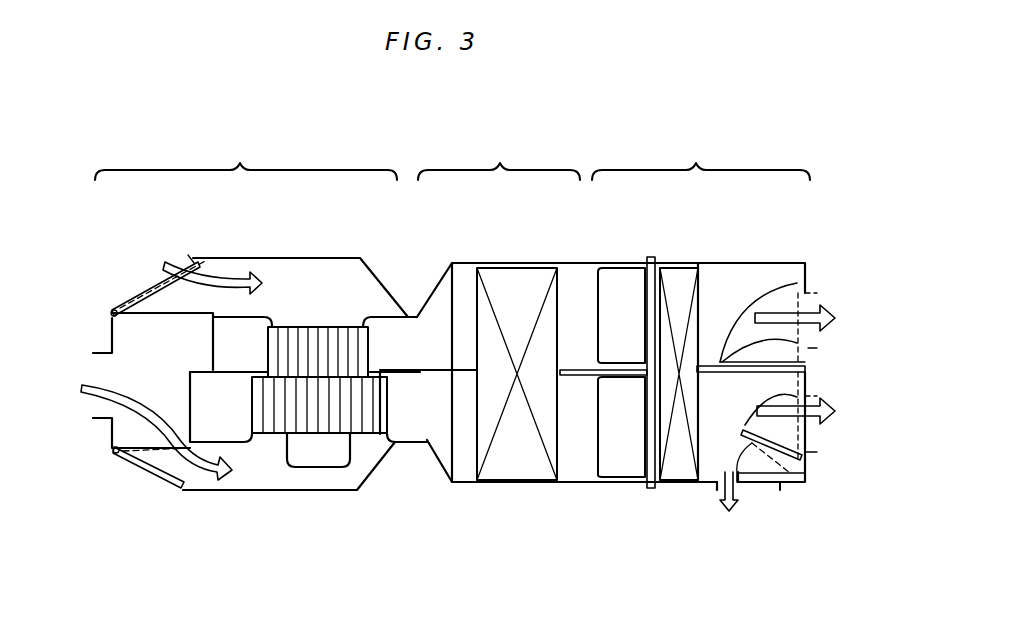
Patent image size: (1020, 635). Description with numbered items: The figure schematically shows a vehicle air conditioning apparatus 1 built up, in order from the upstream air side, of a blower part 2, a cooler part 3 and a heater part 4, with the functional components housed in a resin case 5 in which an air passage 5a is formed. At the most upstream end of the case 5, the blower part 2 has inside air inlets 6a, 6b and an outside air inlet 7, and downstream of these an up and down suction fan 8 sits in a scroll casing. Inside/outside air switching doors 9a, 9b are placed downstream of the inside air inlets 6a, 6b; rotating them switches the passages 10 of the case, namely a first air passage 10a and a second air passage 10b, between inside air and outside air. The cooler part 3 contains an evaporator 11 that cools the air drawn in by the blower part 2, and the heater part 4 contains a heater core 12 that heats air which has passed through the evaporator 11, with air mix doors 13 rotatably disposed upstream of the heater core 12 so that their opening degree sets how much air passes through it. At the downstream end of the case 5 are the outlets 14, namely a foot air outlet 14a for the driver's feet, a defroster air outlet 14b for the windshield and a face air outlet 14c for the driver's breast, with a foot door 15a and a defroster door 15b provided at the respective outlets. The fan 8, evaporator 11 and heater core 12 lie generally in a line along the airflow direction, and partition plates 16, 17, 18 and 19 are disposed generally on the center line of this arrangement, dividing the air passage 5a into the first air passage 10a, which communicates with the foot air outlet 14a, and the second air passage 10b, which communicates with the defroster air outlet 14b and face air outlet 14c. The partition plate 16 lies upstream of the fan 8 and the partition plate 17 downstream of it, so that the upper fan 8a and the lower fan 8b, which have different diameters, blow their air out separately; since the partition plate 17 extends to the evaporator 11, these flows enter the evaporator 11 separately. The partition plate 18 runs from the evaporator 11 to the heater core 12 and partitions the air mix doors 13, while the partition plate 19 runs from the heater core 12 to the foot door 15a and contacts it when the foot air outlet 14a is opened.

The air conditioning apparatus 1 is at (817, 248).
The blower part 2 is at (246, 157).
The cooler part 3 is at (499, 157).
The heater part 4 is at (701, 157).
The case 5 is at (261, 491).
The air passage 5a is at (448, 467).
The inside air inlet 6a is at (138, 287).
The inside air inlet 6b is at (170, 488).
The outside air inlet 7 is at (98, 418).
The up and down suction fan 8 is at (299, 440).
The fan 8a is at (298, 337).
The fan 8b is at (340, 424).
The inside/outside air switching door 9a is at (110, 316).
The inside/outside air switching door 9b is at (137, 470).
The air passage 10 is at (413, 330).
The first air passage 10a is at (577, 287).
The second air passage 10b is at (573, 470).
The evaporator 11 is at (497, 464).
The heater core 12 is at (685, 472).
The air mix door 13 is at (627, 268).
The foot outlet 14 is at (755, 484).
The foot air outlet 14a is at (812, 293).
The defroster air outlet 14b is at (808, 452).
The face air outlet 14c is at (780, 490).
The foot door 15a is at (790, 350).
The defroster door 15b is at (777, 438).
The partition plate 16 is at (240, 382).
The partition plate 17 is at (440, 367).
The partition plate 18 is at (585, 378).
The partition plate 19 is at (710, 325).